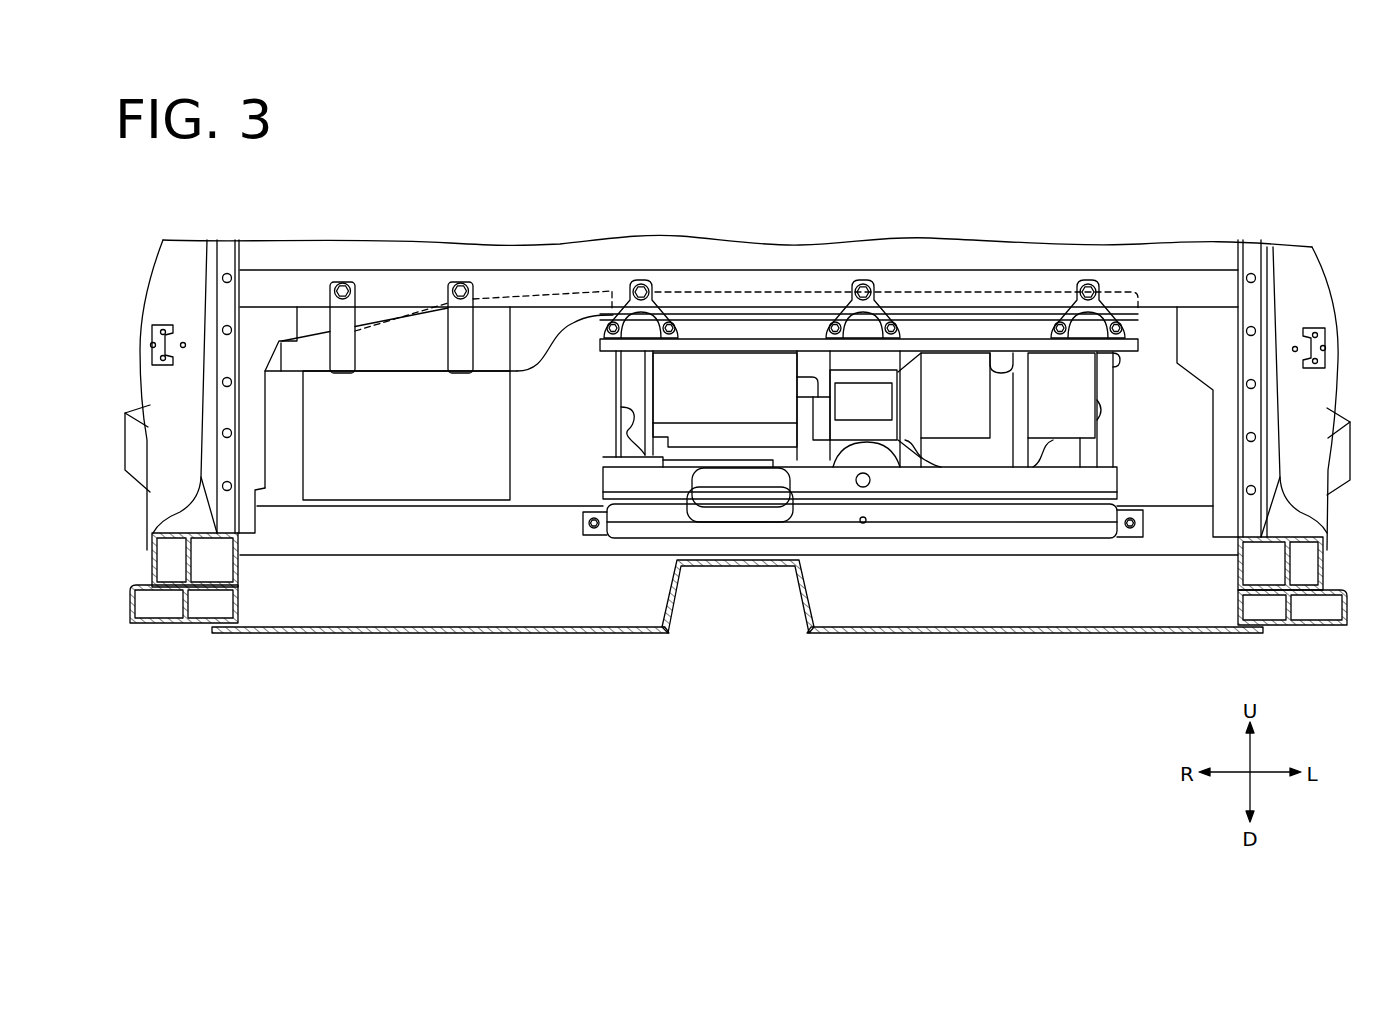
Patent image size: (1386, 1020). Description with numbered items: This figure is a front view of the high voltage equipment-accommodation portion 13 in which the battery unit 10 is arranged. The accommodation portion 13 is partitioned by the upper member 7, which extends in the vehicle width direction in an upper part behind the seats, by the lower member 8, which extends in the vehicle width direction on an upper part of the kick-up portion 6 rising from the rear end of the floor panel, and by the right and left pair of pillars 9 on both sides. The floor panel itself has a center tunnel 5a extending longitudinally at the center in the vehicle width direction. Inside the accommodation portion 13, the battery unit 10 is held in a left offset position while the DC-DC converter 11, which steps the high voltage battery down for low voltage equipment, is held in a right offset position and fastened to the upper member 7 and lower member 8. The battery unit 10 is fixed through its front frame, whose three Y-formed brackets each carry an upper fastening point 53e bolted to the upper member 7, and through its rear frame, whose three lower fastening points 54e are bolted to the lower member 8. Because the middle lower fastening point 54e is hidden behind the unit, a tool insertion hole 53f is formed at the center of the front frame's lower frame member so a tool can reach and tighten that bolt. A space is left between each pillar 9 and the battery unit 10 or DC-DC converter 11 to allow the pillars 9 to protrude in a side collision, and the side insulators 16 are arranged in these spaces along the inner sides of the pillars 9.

The pillar 9 is at (194, 254).
The side insulator 16 is at (262, 350).
The upper member 7 is at (500, 270).
The upper fastening point 53e is at (640, 281).
The battery unit 10 is at (1127, 400).
The lower member 8 is at (272, 527).
The DC-DC converter 11 is at (367, 480).
The kick-up portion 6 is at (441, 598).
The high voltage equipment-accommodation portion 13 is at (553, 478).
The lower fastening point 54e is at (596, 536).
The center tunnel 5a is at (679, 603).
The tool insertion hole 53f is at (871, 481).